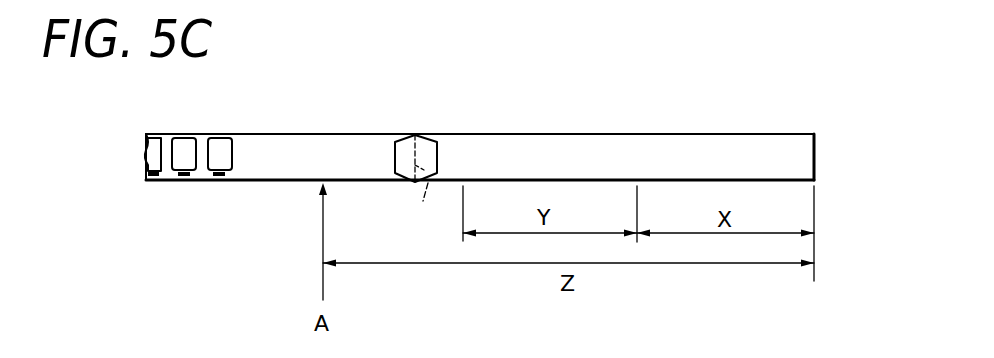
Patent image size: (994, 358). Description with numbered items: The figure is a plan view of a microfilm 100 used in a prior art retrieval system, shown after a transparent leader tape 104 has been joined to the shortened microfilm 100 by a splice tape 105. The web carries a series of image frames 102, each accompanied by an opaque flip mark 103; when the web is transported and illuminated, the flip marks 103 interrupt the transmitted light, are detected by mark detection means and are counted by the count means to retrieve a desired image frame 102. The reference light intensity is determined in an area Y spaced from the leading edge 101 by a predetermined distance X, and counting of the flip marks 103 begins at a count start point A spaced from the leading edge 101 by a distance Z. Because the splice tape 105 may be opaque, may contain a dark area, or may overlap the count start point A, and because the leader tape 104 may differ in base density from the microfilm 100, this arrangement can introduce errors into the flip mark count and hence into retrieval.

The microfilm 100 is at (333, 144).
The leading edge 101 is at (423, 184).
The image frame 102 is at (220, 141).
The flip marks 103 is at (218, 180).
The leader tape 104 is at (650, 134).
The splice tape 105 is at (434, 148).